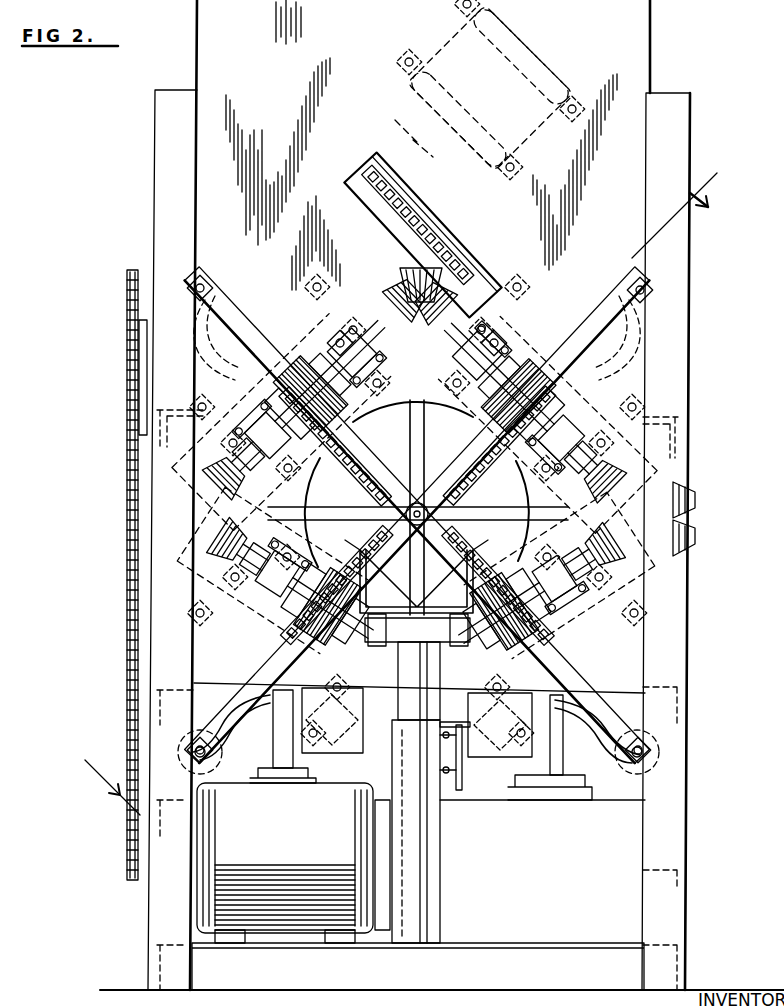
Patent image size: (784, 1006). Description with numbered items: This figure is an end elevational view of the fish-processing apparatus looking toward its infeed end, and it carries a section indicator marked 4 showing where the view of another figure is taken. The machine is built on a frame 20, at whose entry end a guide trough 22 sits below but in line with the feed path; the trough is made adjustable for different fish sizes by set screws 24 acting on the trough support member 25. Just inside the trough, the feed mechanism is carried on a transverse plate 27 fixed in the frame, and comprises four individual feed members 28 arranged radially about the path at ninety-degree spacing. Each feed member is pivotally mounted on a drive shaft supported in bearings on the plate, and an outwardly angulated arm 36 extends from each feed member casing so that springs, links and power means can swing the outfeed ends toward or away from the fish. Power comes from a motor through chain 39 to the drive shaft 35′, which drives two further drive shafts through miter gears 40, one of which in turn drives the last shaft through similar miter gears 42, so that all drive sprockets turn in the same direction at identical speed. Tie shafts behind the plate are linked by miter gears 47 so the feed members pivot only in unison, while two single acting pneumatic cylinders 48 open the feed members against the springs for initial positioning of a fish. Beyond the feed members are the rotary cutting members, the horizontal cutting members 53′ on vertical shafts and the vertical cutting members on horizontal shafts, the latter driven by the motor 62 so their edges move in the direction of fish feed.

The frame 20 is at (688, 912).
The guide trough 22 is at (475, 553).
The set screws 24 is at (462, 787).
The trough support member 25 is at (402, 700).
The transverse plate 27 is at (217, 60).
The feed members 28 is at (348, 455).
The drive shaft 35′ is at (382, 336).
The angulated arm 36 is at (596, 322).
The chain 39 is at (433, 224).
The miter gears 40 is at (430, 295).
The miter gears 42 is at (583, 523).
The miter gears 47 is at (697, 503).
The pneumatic cylinders 48 is at (148, 756).
The horizontal cutting members 53′ is at (527, 535).
The motor 62 is at (200, 870).
The section line 4 is at (402, 494).